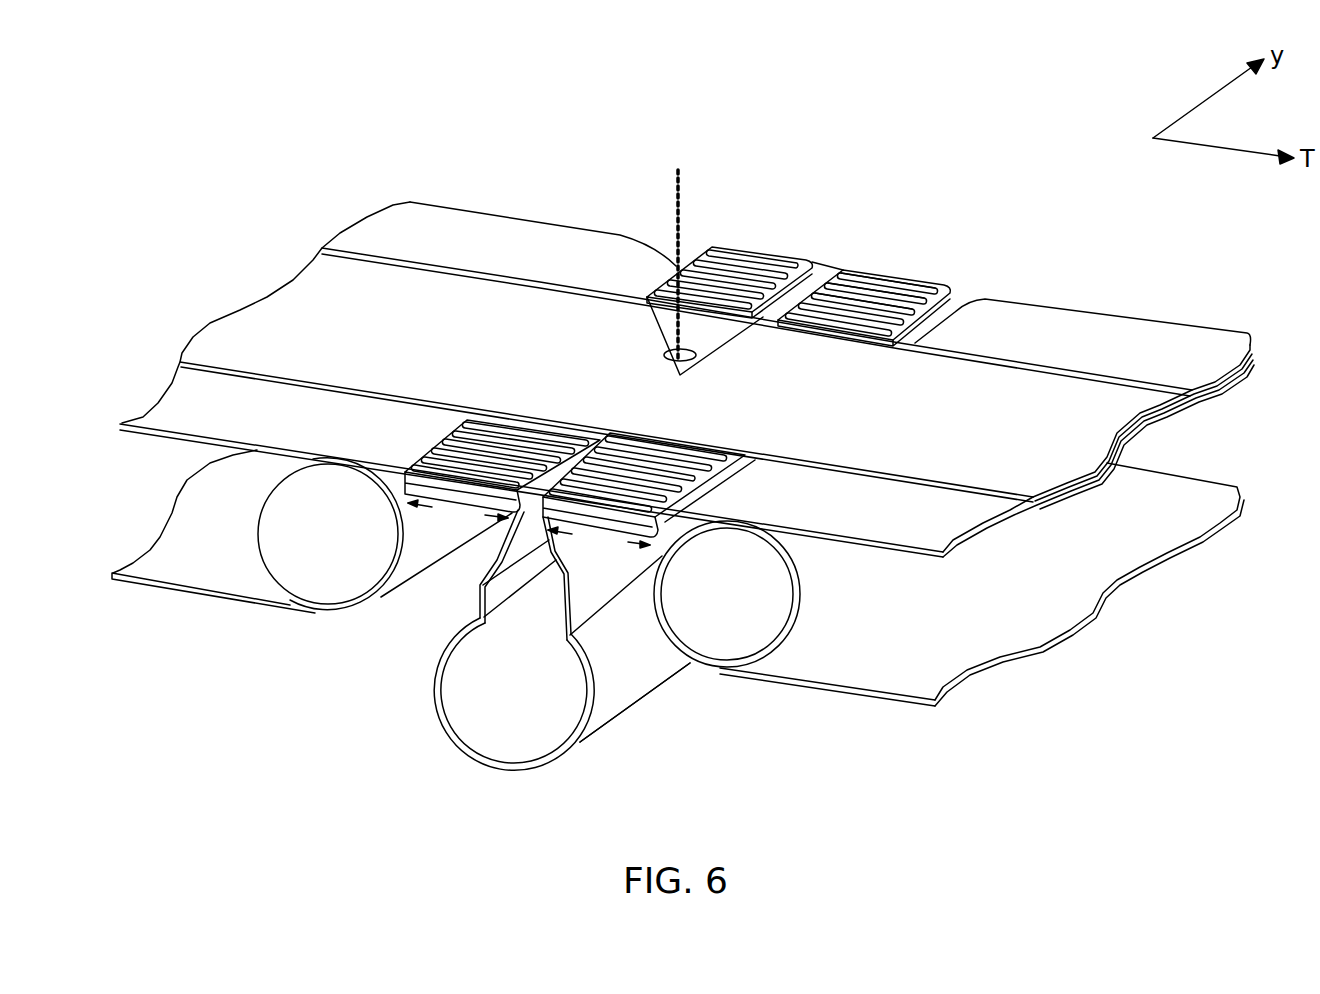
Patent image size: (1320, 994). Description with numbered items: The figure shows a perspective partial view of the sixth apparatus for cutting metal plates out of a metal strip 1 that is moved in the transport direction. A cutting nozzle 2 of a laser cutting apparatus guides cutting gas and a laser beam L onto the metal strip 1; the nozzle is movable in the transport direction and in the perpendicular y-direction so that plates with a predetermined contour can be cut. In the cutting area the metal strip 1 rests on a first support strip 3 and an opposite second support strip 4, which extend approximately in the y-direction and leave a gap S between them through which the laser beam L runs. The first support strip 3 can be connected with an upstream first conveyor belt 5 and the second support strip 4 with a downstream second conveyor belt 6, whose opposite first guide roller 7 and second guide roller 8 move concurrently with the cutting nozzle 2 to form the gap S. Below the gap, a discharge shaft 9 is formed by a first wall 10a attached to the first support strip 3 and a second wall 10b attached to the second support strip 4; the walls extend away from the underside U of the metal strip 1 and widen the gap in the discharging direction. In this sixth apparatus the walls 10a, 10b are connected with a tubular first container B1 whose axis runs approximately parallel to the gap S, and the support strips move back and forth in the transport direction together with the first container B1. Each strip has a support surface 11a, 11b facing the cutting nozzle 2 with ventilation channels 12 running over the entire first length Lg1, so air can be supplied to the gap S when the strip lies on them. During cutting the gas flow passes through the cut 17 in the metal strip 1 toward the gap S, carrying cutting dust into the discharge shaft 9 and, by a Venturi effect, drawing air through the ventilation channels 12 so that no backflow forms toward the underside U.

The metal strip 1 is at (390, 323).
The cutting nozzle 2 is at (660, 350).
The first support strip 3 is at (736, 248).
The second support strip 4 is at (900, 285).
The first conveyor belt 5 is at (163, 560).
The second conveyor belt 6 is at (933, 640).
The first guide roller 7 is at (273, 510).
The second guide roller 8 is at (743, 640).
The discharge shaft 9 is at (548, 629).
The first wall 10a is at (480, 592).
The second wall 10b is at (580, 608).
The support surface 11a is at (463, 430).
The support surface 11b is at (900, 300).
The ventilation channels 12 is at (442, 496).
The cut 17 is at (723, 345).
The first container B1 is at (500, 763).
The underside U is at (760, 462).
The gap S is at (827, 272).
The laser beam L is at (677, 210).
The first length Lg1 is at (529, 531).